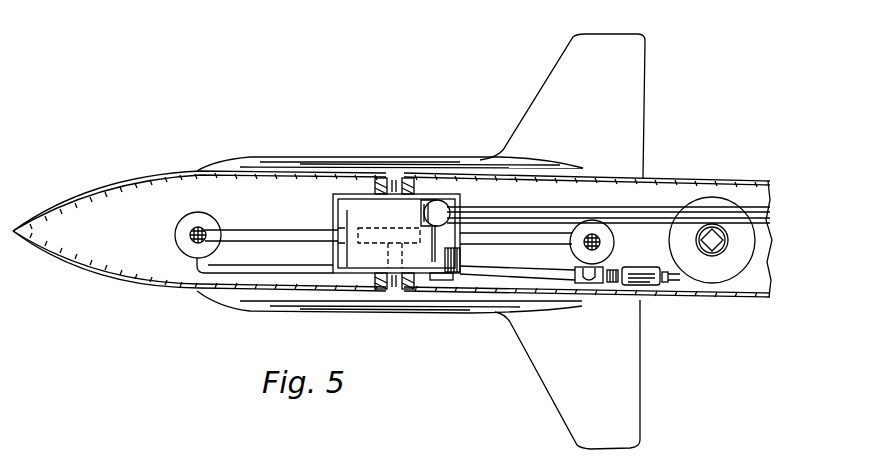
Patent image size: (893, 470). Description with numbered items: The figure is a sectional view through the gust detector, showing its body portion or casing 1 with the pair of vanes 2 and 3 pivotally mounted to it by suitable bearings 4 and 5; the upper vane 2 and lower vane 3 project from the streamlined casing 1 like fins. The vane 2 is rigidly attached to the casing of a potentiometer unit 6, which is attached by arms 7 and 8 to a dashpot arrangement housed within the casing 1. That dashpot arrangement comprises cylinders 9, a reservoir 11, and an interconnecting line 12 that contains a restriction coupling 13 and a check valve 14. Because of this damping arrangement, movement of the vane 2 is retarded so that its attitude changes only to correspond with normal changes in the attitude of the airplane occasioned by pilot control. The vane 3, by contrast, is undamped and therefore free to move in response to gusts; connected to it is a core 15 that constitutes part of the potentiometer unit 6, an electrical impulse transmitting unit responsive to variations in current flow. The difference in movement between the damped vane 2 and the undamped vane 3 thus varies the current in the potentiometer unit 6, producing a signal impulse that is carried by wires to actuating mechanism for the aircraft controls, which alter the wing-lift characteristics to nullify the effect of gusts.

The casing 1 is at (155, 176).
The vane 2 is at (559, 74).
The vane 3 is at (560, 400).
The bearing 4 is at (413, 194).
The bearing 5 is at (416, 285).
The potentiometer unit 6 is at (336, 208).
The arm 7 is at (246, 234).
The arm 8 is at (554, 246).
The cylinder 9 is at (212, 212).
The reservoir 11 is at (676, 252).
The interconnecting line 12 is at (233, 267).
The restriction coupling 13 is at (455, 281).
The check valve 14 is at (650, 260).
The core 15 is at (402, 230).